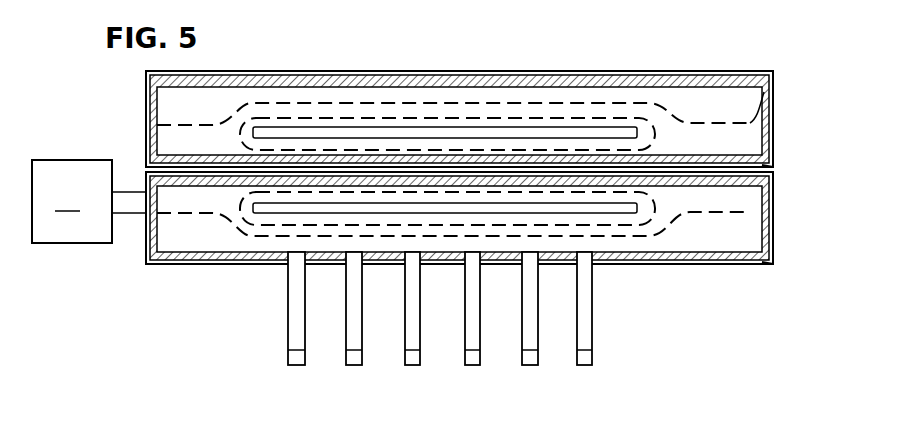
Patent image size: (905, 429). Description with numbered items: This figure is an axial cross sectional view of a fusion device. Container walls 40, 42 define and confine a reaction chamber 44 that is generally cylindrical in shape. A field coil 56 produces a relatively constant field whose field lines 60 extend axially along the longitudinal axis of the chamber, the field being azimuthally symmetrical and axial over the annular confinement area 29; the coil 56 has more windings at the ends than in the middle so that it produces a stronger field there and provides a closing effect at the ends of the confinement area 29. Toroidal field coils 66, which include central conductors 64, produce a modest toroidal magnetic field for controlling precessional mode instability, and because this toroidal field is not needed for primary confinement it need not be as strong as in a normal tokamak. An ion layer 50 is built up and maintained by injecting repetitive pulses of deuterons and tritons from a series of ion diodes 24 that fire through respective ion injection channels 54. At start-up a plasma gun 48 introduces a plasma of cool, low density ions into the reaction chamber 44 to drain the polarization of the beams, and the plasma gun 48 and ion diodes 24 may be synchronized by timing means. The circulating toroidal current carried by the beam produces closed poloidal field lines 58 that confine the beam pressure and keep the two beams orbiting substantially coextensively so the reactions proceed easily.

The container wall 40 is at (238, 264).
The reaction chamber 44 is at (164, 107).
The container wall 42 is at (150, 232).
The plasma gun 48 is at (89, 201).
The ion layer 50 is at (365, 133).
The field lines 60 is at (498, 103).
The closed poloidal field lines 58 is at (565, 117).
The annular confinement area 29 is at (459, 126).
The field coil 56 is at (763, 74).
The central conductors 64 is at (772, 167).
The toroidal field coils 66 is at (754, 264).
The ion injection channels 54 is at (346, 278).
The ion diodes 24 is at (292, 362).